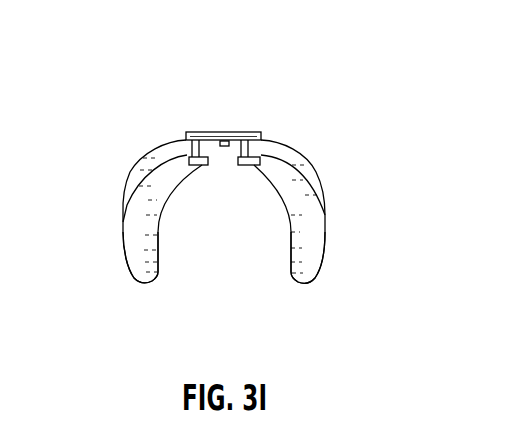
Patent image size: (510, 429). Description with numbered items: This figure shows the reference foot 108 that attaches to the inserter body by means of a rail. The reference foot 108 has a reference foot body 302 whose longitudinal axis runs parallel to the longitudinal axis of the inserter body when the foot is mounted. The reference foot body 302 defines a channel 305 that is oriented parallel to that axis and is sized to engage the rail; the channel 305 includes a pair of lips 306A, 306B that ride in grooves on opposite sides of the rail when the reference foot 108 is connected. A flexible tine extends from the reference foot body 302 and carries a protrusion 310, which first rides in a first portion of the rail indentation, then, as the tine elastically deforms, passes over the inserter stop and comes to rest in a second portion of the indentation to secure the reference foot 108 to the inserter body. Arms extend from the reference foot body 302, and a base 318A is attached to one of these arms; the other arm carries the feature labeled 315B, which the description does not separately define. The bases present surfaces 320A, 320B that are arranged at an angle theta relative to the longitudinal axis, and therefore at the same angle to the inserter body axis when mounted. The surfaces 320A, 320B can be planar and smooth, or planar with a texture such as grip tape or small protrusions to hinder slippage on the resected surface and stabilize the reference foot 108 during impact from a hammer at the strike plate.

The reference foot 108 is at (138, 34).
The reference foot body 302 is at (203, 132).
The channel 305 is at (236, 150).
The protrusion 310 is at (226, 146).
The lip 306A is at (198, 167).
The lip 306B is at (246, 167).
The left arm 315B is at (138, 170).
The base 318A is at (312, 172).
The surface 320A is at (141, 274).
The surface 320B is at (313, 262).